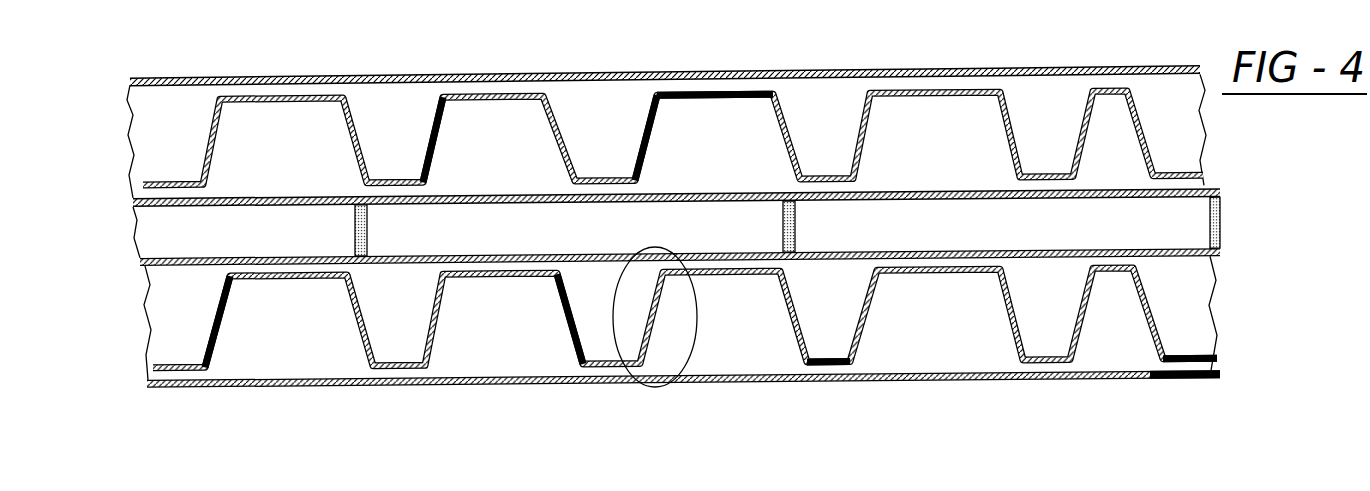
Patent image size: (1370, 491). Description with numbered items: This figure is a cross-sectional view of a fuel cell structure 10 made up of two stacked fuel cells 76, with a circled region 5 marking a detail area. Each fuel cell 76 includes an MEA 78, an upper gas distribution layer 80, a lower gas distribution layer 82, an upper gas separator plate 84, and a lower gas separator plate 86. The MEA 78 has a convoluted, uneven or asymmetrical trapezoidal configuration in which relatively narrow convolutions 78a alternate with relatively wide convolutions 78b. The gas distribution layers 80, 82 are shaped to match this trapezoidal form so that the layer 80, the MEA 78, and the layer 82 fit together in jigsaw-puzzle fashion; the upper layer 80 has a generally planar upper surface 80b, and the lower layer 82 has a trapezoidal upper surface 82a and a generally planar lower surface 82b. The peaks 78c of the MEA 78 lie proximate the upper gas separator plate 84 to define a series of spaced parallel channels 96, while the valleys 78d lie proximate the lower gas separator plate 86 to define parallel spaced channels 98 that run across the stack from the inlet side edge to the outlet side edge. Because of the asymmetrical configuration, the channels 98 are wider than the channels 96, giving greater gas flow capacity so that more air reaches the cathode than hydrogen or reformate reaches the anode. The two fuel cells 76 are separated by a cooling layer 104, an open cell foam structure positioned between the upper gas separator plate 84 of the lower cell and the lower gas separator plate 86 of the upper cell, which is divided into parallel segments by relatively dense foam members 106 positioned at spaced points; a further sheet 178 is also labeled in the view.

The composite panel 10 is at (973, 133).
The detail area of FIG. 5 is at (698, 334).
The fuel cell 76 is at (130, 140).
The MEA 78 is at (501, 84).
The relatively narrow convolutions 78a is at (655, 135).
The relatively wide convolutions 78b is at (432, 118).
The peaks of the MEA 78c is at (720, 88).
The valleys of the MEA 78d is at (838, 363).
The upper gas distribution layer 80 is at (838, 88).
The generally planar upper surface 80b is at (1200, 256).
The lower gas distribution layer 82 is at (950, 106).
The trapezoidal upper surface 82a is at (1170, 350).
The generally planar lower surface 82b is at (1178, 375).
The upper gas separator plate 84 is at (167, 80).
The lower gas separator plate 86 is at (132, 204).
The spaced parallel channels 96 is at (1053, 113).
The parallel spaced channels 98 is at (326, 335).
The cooling layer 104 is at (1222, 234).
The relatively dense foam members 106 is at (367, 222).
The corrugated sheet 178 is at (768, 490).